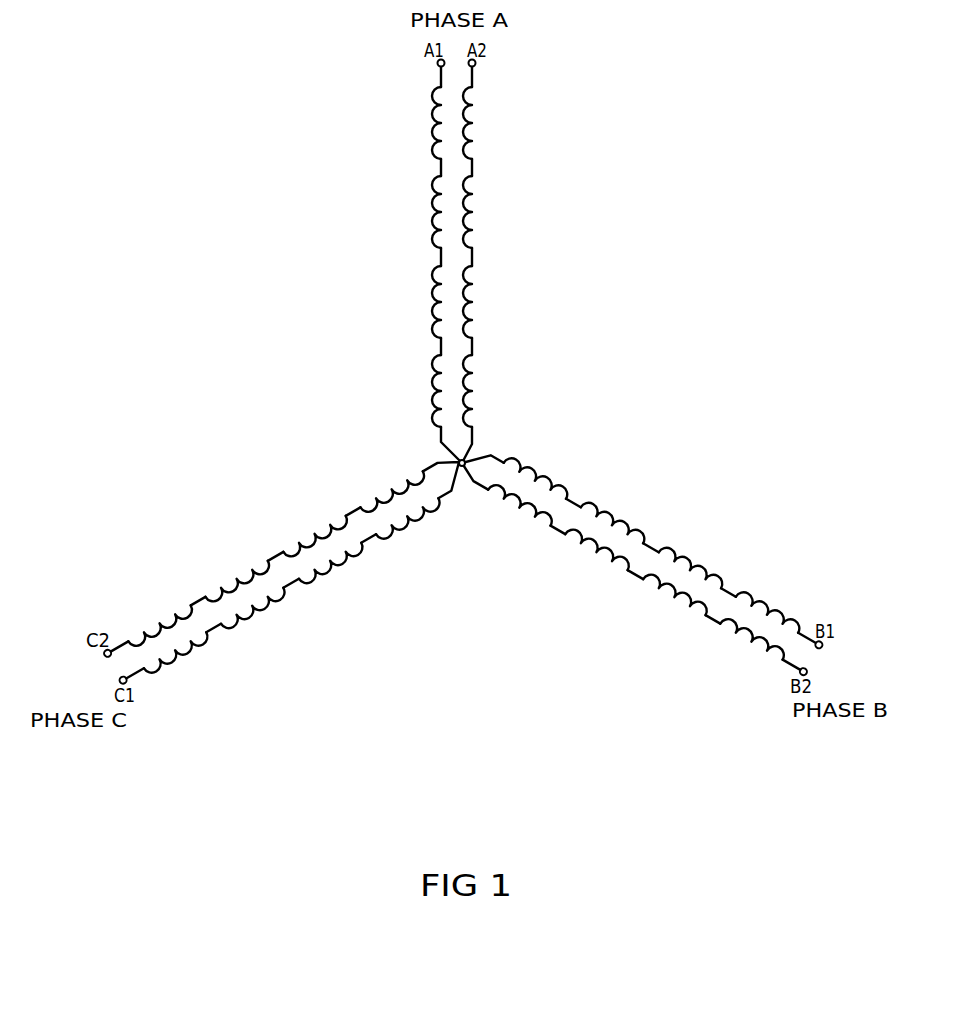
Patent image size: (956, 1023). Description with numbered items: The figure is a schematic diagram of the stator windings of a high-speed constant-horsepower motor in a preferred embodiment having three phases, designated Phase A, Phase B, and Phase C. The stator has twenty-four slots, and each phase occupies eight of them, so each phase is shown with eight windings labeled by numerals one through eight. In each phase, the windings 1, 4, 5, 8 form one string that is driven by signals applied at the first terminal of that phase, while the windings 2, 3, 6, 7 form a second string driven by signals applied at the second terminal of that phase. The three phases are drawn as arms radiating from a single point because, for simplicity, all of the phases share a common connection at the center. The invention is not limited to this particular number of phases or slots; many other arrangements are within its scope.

The winding 1 is at (473, 448).
The winding 2 is at (457, 446).
The winding 3 is at (457, 424).
The winding 4 is at (473, 426).
The winding 5 is at (473, 403).
The winding 6 is at (457, 400).
The winding 7 is at (457, 379).
The winding 8 is at (473, 382).